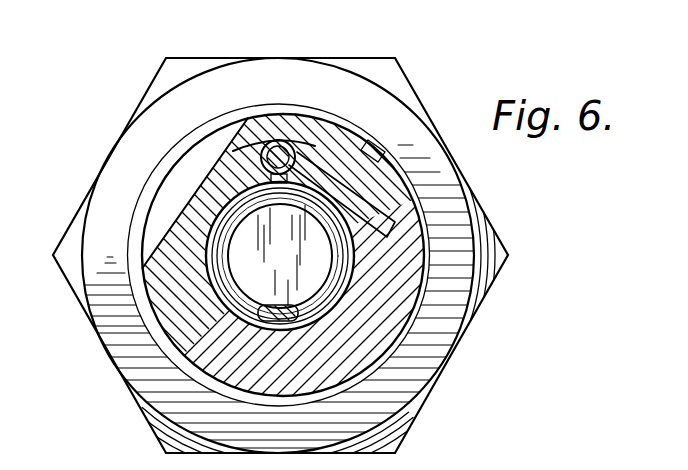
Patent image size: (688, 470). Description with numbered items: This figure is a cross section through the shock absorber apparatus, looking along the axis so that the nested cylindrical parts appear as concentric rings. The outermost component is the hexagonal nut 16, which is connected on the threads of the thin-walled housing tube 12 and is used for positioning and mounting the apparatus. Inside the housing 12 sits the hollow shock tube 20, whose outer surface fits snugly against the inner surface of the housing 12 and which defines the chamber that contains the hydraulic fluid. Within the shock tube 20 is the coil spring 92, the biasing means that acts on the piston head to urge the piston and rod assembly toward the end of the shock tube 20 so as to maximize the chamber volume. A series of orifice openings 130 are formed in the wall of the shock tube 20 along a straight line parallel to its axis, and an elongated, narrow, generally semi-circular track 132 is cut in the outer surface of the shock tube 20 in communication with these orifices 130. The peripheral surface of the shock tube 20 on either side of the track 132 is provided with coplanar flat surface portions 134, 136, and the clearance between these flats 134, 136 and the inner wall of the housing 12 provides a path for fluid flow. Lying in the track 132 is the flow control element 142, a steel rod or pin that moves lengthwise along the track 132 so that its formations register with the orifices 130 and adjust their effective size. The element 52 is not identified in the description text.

The tube 12 is at (190, 367).
The hexagonal nut 16 is at (427, 373).
The shock tube 20 is at (190, 295).
The central bore sleeve 52 is at (316, 257).
The coil spring 92 is at (396, 287).
The orifice openings 130 is at (380, 150).
The track 132 is at (345, 136).
The flat surface portion 134 is at (253, 142).
The flat surface portion 136 is at (313, 146).
The flow control element 142 is at (280, 142).